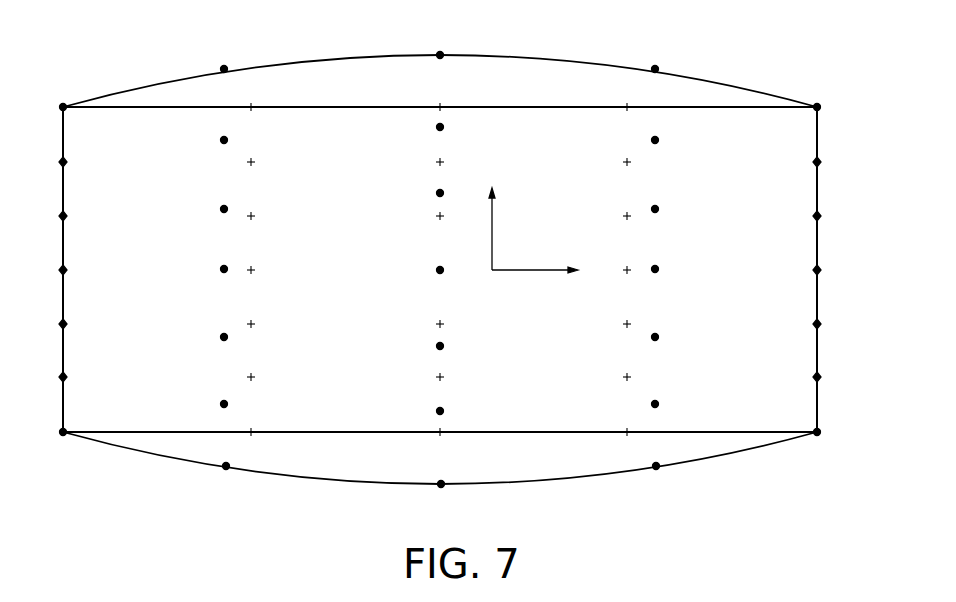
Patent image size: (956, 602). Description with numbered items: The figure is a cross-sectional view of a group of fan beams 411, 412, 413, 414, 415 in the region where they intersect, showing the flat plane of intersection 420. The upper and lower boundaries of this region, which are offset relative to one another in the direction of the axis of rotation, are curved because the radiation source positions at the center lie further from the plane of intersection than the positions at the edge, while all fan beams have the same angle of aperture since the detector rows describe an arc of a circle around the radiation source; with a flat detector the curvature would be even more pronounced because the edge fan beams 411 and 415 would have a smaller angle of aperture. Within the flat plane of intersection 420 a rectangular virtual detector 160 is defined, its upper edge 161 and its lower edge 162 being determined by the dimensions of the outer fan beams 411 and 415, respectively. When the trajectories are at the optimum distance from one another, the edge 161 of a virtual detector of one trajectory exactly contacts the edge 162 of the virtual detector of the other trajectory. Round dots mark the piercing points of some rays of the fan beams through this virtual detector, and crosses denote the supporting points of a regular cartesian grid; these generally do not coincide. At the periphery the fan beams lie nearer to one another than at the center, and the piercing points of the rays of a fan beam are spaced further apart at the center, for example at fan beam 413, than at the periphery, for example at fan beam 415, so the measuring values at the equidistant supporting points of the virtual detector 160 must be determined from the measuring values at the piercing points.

The fan beam 411 is at (62, 133).
The fan beam 412 is at (217, 97).
The fan beam 413 is at (440, 90).
The fan beam 414 is at (658, 97).
The fan beam 415 is at (819, 120).
The plane of intersection 420 is at (513, 56).
The upper edge 161 is at (357, 108).
The lower edge 162 is at (347, 432).
The virtual detector 160 is at (745, 229).